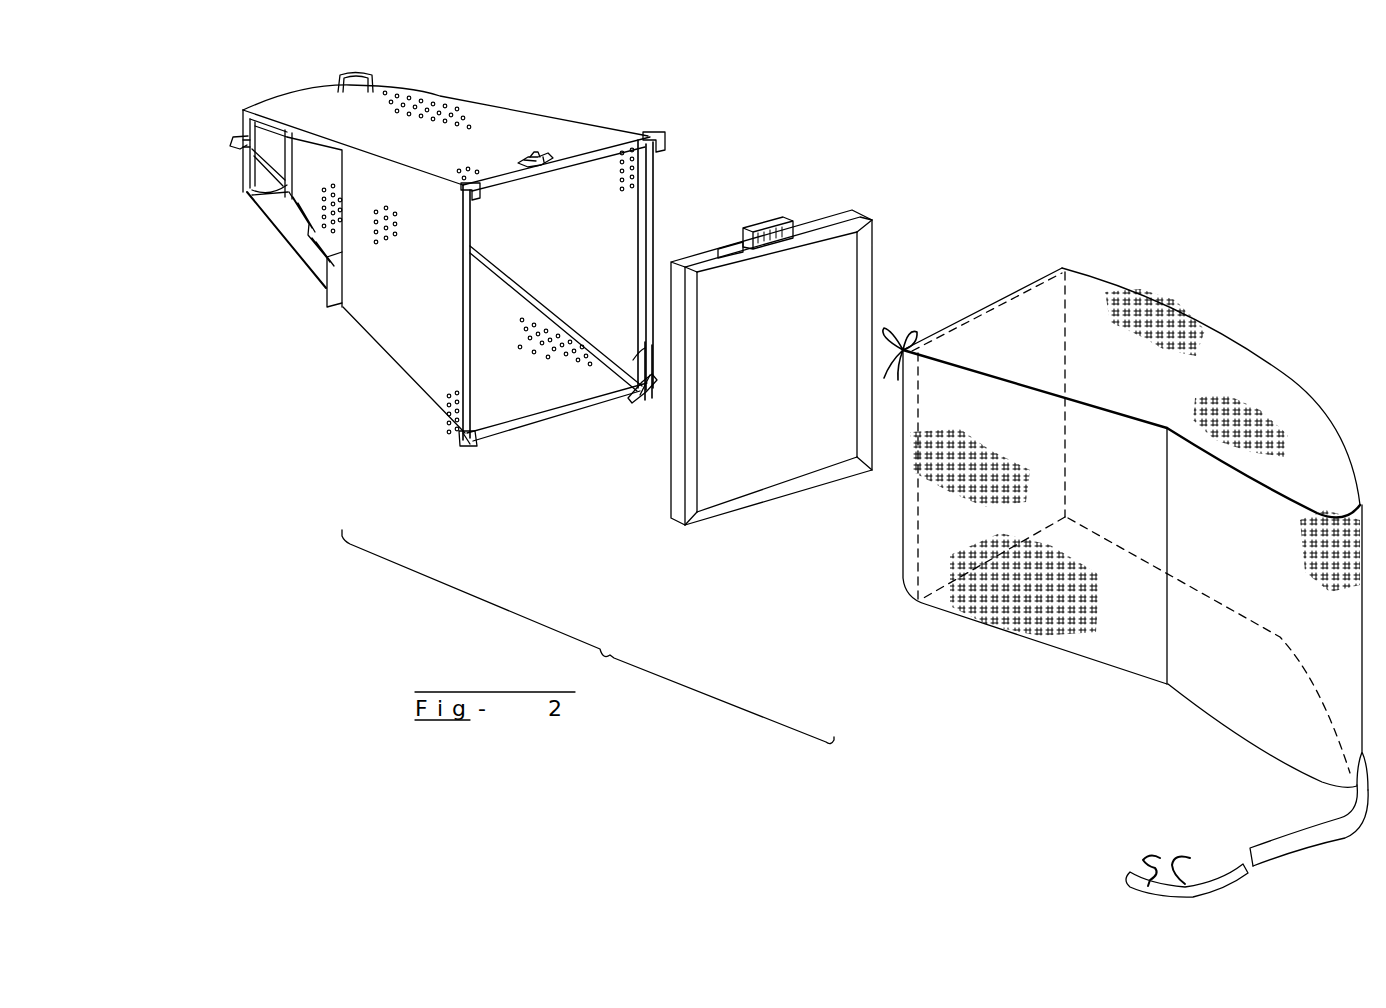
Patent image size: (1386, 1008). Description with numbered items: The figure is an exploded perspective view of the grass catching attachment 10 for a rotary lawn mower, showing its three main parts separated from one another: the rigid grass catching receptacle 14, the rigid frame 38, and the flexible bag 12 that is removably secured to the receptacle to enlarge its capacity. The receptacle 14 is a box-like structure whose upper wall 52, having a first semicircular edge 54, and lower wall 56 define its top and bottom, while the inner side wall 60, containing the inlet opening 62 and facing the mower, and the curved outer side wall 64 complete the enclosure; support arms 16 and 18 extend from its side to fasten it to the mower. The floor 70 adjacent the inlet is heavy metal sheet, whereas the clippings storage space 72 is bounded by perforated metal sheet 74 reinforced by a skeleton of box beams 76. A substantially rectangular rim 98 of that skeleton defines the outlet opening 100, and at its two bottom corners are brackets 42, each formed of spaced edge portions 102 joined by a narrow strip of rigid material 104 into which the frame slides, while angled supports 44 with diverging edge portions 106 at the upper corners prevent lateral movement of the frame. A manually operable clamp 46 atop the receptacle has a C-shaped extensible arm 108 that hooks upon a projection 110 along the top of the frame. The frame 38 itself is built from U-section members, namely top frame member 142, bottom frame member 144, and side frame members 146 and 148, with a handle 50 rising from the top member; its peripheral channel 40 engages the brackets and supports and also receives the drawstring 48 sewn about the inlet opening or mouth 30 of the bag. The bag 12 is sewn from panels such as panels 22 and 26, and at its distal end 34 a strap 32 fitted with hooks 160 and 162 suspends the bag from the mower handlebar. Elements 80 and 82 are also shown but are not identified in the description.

The grass catching attachment 10 is at (707, 580).
The flexible bag 12 is at (1237, 308).
The grass catching receptacle 14 is at (560, 103).
The support arm 16 is at (243, 135).
The support arm 18 is at (230, 191).
The panel 22 is at (1111, 339).
The panel 26 is at (981, 424).
The inlet opening or mouth 30 is at (960, 503).
The strap 32 is at (1313, 827).
The distal end 34 is at (1303, 730).
The rigid frame 38 is at (880, 237).
The peripheral channel 40 is at (680, 500).
The bracket 42 is at (460, 455).
The angled support 44 is at (457, 192).
The manually operable clamp 46 is at (510, 155).
The drawstring 48 is at (895, 333).
The handle 50 is at (767, 217).
The upper wall 52 is at (414, 139).
The first semicircular edge 54 is at (428, 94).
The lower wall 56 is at (513, 334).
The inner side wall 60 is at (372, 209).
The inlet opening 62 is at (297, 237).
The outer side wall 64 is at (589, 229).
The floor 70 is at (315, 256).
The clippings storage space 72 is at (518, 277).
The perforated metal sheet 74 is at (635, 173).
The reinforcing skeleton 76 is at (587, 357).
The hinge 80 is at (234, 140).
The rear door frame 82 is at (250, 198).
The rectangular rim 98 is at (463, 307).
The outlet opening 100 is at (547, 390).
The edge portions 102 is at (650, 352).
The narrow strip of rigid material 104 is at (465, 436).
The edge portions 106 is at (646, 131).
The C-shaped extensible arm 108 is at (542, 160).
The projection 110 is at (722, 243).
The top frame member 142 is at (803, 242).
The bottom frame member 144 is at (762, 485).
The side frame member 146 is at (695, 447).
The side frame member 148 is at (850, 297).
The hook 160 is at (1147, 857).
The hook 162 is at (1178, 857).